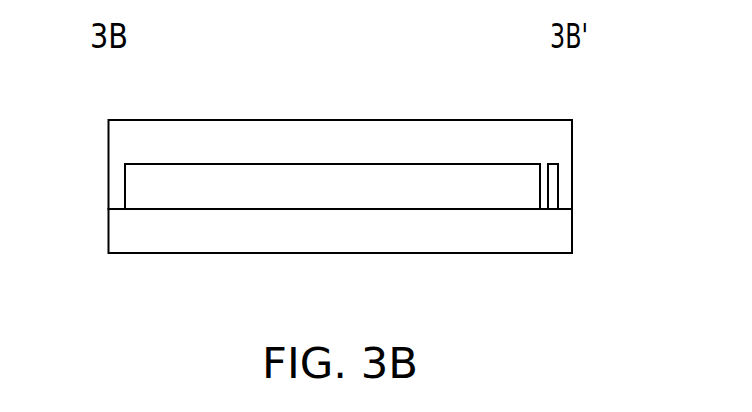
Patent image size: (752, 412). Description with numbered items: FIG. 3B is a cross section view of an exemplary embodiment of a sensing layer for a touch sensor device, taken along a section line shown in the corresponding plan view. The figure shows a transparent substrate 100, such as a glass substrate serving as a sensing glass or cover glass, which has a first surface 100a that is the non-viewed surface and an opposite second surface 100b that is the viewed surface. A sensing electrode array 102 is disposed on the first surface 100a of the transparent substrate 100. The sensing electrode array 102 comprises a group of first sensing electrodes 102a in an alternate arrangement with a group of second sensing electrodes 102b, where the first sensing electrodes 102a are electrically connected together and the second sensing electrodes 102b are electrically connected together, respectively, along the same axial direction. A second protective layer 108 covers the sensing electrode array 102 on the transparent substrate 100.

The transparent substrate 100 is at (563, 232).
The first surface 100a is at (119, 207).
The second surface 100b is at (120, 254).
The sensing electrode array 102 is at (421, 163).
The first sensing electrodes 102a is at (512, 172).
The second sensing electrodes 102b is at (553, 182).
The second protective layer 108 is at (178, 132).